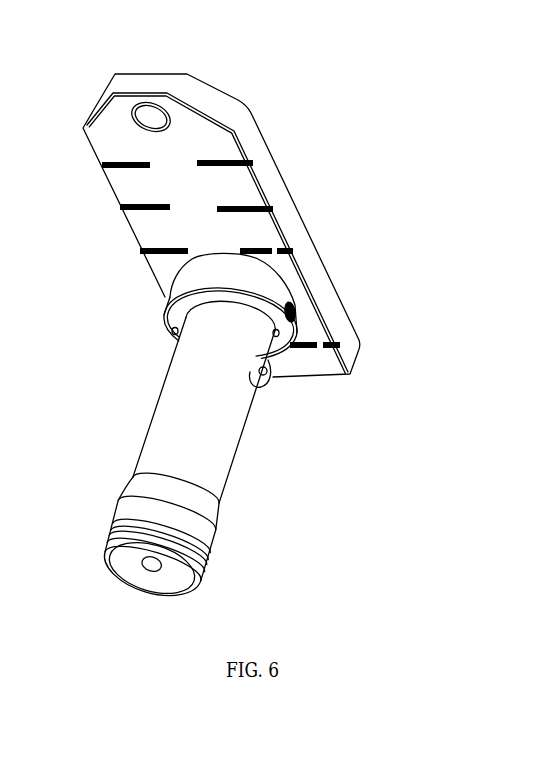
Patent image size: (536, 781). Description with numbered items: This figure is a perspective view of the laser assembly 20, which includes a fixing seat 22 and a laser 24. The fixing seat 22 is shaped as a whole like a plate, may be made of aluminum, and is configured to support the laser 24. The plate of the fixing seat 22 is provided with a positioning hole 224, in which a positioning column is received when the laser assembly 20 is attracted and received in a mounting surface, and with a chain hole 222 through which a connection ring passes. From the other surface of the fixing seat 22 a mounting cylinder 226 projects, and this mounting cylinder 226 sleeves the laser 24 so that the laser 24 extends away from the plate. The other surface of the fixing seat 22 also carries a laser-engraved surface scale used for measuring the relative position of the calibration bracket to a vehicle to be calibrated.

The laser assembly 20 is at (333, 34).
The fixing seat 22 is at (250, 193).
The positioning hole 224 is at (155, 120).
The mounting cylinder 226 is at (272, 300).
The chain hole 222 is at (272, 376).
The laser 24 is at (217, 438).